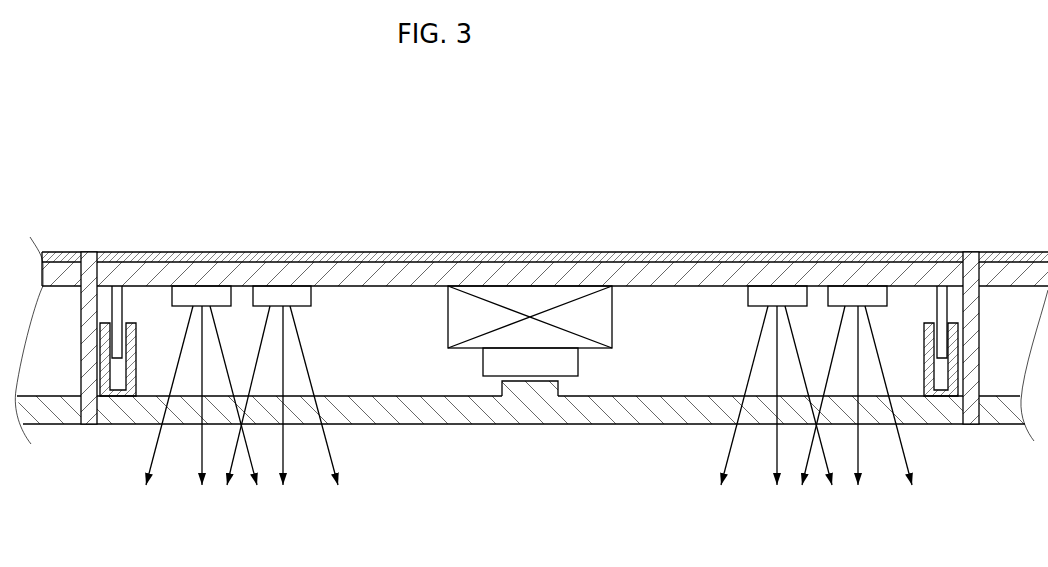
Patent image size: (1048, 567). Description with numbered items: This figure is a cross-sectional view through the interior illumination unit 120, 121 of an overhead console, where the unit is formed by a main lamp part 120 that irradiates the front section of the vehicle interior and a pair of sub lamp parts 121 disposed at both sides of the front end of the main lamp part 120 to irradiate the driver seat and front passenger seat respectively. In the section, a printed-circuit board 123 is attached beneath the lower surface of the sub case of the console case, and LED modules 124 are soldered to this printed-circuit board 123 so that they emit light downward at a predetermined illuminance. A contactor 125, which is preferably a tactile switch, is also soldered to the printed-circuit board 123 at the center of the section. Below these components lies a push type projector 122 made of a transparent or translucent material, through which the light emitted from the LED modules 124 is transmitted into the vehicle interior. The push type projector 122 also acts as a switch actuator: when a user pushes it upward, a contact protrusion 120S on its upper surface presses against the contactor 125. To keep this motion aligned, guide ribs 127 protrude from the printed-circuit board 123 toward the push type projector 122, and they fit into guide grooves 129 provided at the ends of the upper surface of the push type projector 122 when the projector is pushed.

The main lamp part 120 is at (531, 391).
The sub lamp parts 121 is at (482, 440).
The seating protrusion 120S is at (535, 387).
The push type projector 122 is at (392, 407).
The printed-circuit board 123 is at (373, 275).
The LED modules 124 is at (282, 297).
The contactor 125 is at (530, 305).
The guide ribs 127 is at (117, 310).
The guide grooves 129 is at (107, 375).